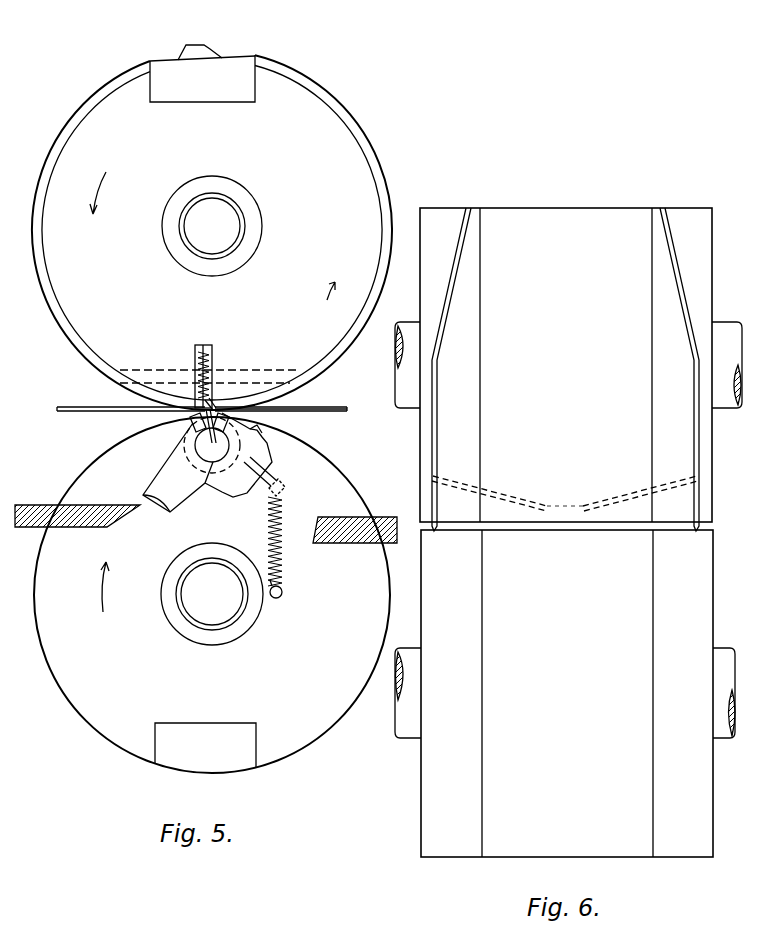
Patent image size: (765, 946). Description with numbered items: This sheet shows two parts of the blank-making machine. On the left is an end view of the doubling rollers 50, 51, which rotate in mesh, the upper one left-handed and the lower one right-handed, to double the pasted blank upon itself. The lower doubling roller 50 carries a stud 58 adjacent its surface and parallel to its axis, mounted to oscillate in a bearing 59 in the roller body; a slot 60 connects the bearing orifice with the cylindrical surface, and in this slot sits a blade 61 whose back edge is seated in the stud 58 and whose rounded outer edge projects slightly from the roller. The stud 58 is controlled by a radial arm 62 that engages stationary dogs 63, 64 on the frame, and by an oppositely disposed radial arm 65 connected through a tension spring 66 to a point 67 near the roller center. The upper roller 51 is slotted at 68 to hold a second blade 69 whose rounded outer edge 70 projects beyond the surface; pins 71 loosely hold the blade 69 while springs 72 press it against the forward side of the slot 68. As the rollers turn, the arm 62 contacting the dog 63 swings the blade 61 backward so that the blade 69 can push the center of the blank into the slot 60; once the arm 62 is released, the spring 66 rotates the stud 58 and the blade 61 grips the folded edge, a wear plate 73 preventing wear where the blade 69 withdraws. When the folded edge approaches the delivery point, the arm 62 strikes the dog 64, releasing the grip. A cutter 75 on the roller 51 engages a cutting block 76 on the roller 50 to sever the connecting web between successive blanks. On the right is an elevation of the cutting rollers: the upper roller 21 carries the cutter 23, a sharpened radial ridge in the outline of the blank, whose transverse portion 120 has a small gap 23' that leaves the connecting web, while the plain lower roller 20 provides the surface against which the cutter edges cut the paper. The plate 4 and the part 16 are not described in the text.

In FIG. 5, the plate 4 is at (70, 412).
In FIG. 6, the shaft journal 16 is at (398, 738).
In FIG. 6, the lower roller 20 is at (420, 792).
In FIG. 6, the roller 21 is at (566, 365).
In FIG. 6, the cutter 23 is at (569, 352).
In FIG. 6, the opening or gap 23' is at (565, 489).
In FIG. 5, the doubling roller 50 is at (212, 595).
In FIG. 5, the doubling roller 51 is at (212, 232).
In FIG. 5, the stud 58 is at (202, 445).
In FIG. 5, the bearing 59 is at (213, 465).
In FIG. 5, the slot 60 is at (192, 419).
In FIG. 5, the blade 61 is at (200, 428).
In FIG. 5, the radial arm 62 is at (168, 468).
In FIG. 5, the stationary dog 63 is at (118, 527).
In FIG. 5, the stationary dog 64 is at (355, 518).
In FIG. 5, the radial arm 65 is at (280, 476).
In FIG. 5, the tension spring 66 is at (283, 522).
In FIG. 5, the point 67 is at (283, 592).
In FIG. 5, the slot 68 is at (195, 352).
In FIG. 5, the blade 69 is at (212, 352).
In FIG. 5, the outer edge 70 is at (216, 406).
In FIG. 5, the pins 71 is at (279, 369).
In FIG. 5, the springs 72 is at (198, 366).
In FIG. 5, the wear plate 73 is at (275, 409).
In FIG. 5, the cutter 75 is at (204, 44).
In FIG. 5, the cutting block 76 is at (205, 745).
In FIG. 6, the transverse portion 120 is at (512, 492).